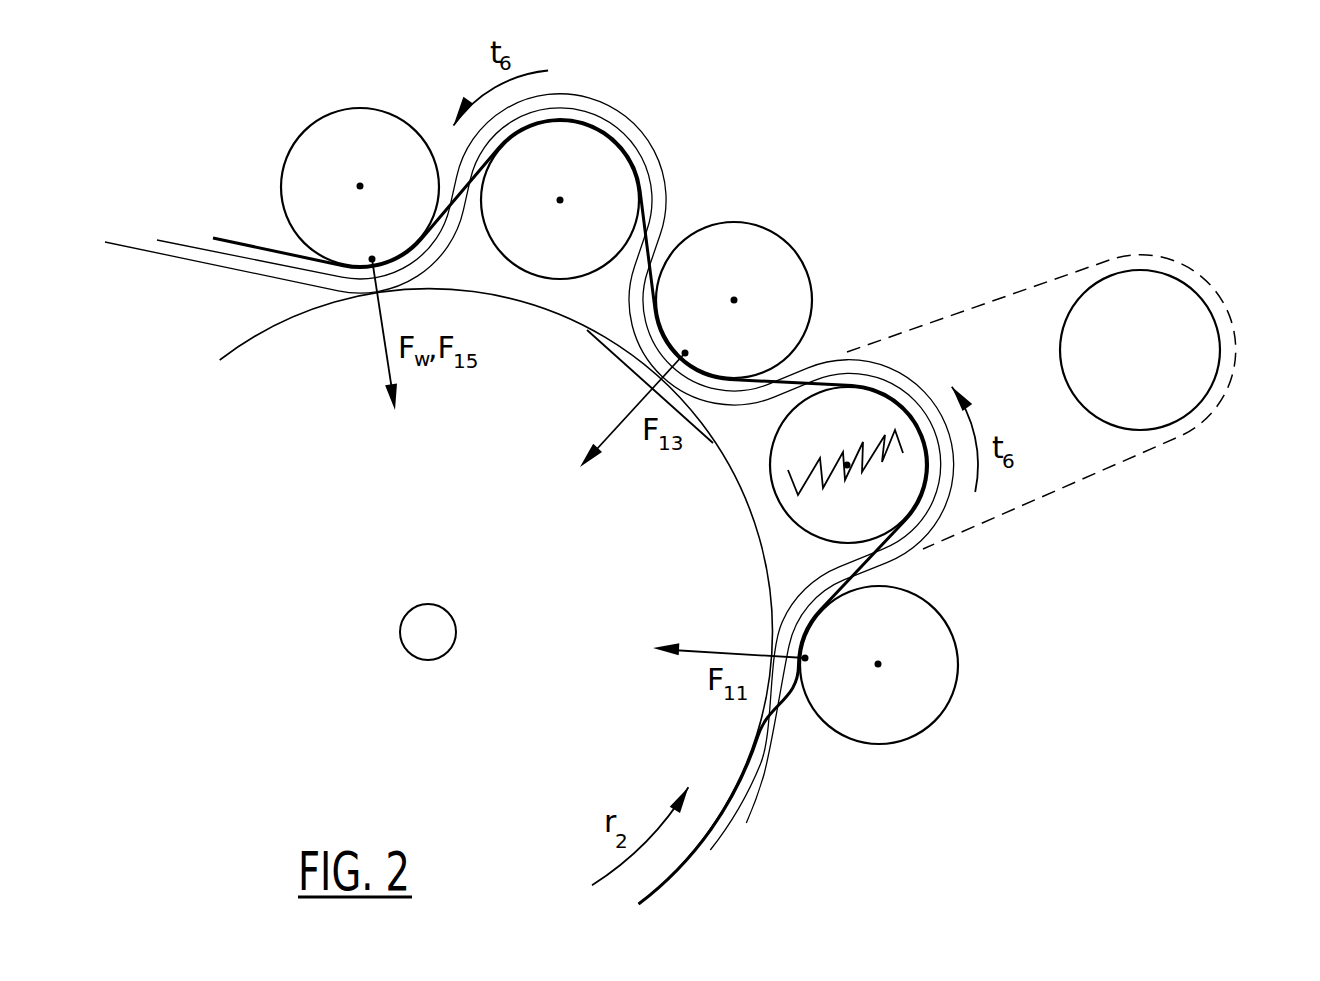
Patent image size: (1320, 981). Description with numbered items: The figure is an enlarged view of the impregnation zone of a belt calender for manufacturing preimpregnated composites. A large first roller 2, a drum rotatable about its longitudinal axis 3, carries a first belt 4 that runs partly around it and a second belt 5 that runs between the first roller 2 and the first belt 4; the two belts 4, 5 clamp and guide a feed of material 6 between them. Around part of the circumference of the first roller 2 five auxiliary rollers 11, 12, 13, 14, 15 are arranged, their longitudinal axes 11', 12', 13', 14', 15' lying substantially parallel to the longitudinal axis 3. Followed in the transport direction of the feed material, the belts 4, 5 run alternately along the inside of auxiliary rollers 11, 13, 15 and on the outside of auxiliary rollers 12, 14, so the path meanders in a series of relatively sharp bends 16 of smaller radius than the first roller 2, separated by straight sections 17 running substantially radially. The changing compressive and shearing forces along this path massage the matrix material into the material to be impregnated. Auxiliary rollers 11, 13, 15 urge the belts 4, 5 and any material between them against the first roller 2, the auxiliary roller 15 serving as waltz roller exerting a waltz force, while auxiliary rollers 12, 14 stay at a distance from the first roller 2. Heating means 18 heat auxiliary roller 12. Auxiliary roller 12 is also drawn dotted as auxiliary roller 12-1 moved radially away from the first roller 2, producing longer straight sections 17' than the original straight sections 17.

The first roller 2 is at (523, 541).
The longitudinal axis 3 is at (412, 640).
The first belt 4 is at (770, 777).
The second belt 5 is at (725, 832).
The feed of material 6 is at (683, 863).
The auxiliary roller 11 is at (950, 670).
The longitudinal axis 11' is at (953, 632).
The auxiliary roller 12 is at (791, 465).
The longitudinal axis 12' is at (875, 379).
The auxiliary roller 12-1 is at (1165, 300).
The auxiliary roller 13 is at (780, 279).
The longitudinal axis 13' is at (739, 229).
The auxiliary roller 14 is at (624, 186).
The longitudinal axis 14' is at (582, 121).
The auxiliary roller 15 is at (327, 150).
The longitudinal axis 15' is at (283, 167).
The relatively sharp bend 16 is at (602, 474).
The straight section 17 is at (611, 416).
The straight section 17' is at (1041, 367).
The heating means 18 is at (875, 462).